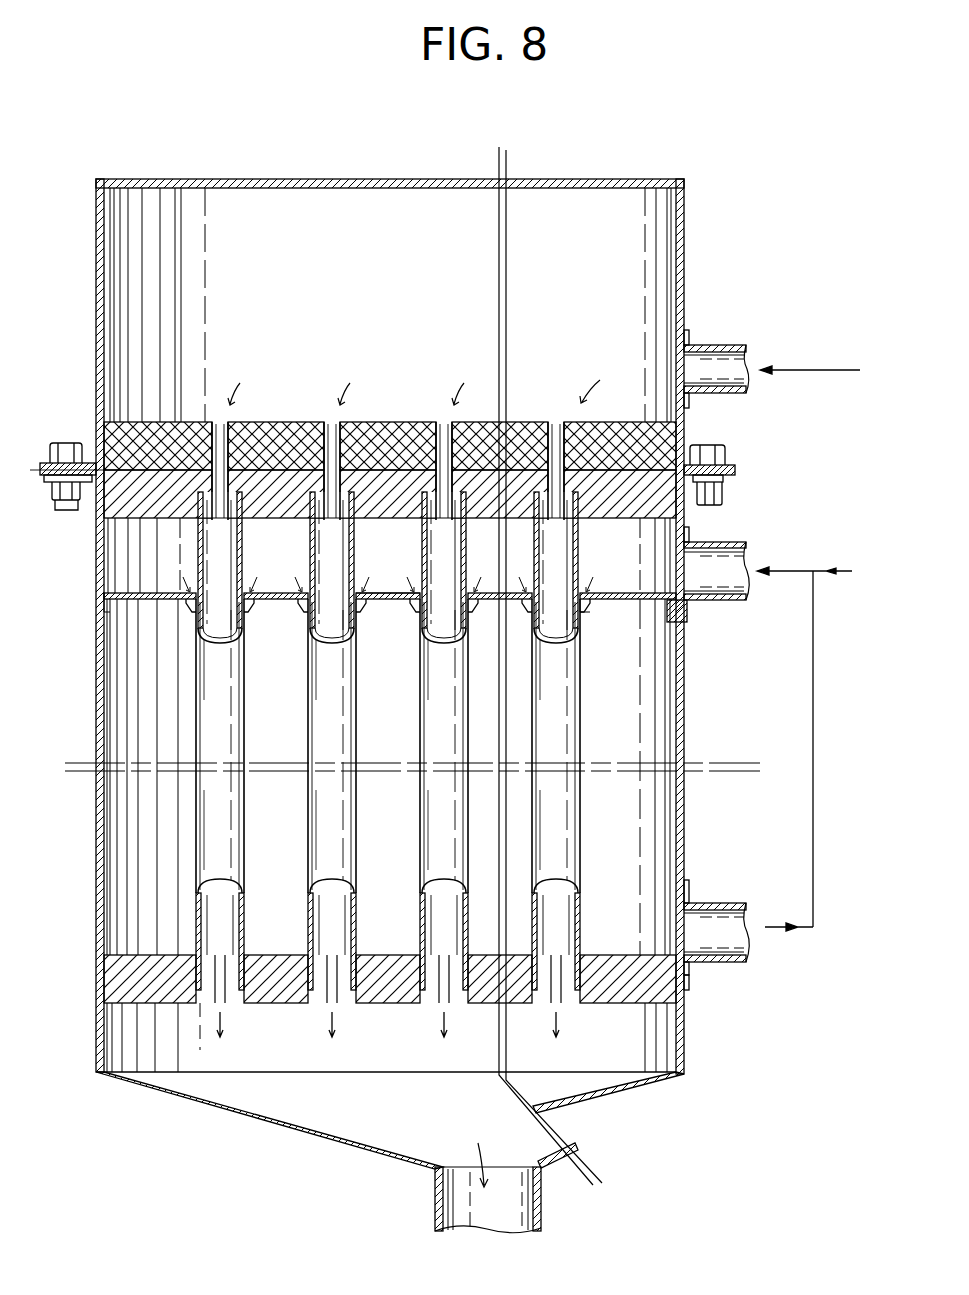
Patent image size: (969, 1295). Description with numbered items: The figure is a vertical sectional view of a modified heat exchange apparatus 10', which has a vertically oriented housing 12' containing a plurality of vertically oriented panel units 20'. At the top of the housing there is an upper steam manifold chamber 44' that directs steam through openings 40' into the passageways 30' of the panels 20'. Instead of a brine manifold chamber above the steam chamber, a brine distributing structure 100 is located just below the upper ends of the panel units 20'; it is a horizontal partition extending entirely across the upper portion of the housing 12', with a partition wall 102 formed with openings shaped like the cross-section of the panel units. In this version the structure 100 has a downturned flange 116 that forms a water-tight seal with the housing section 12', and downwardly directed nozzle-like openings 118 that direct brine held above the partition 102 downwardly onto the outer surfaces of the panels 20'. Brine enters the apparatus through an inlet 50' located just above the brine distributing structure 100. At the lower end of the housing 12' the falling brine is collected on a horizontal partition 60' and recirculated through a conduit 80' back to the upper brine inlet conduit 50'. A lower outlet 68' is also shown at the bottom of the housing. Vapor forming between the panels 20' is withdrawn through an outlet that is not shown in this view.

The heat exchange apparatus 10' is at (445, 690).
The housing 12' is at (426, 674).
The panel units 20' is at (403, 807).
The passageways 30' is at (415, 567).
The through openings 40' is at (388, 431).
The upper steam manifold chamber 44' is at (744, 341).
The brine inlet 50' is at (768, 714).
The horizontal partition 60' is at (423, 979).
The outlet 68' is at (521, 1188).
The conduit 80' is at (748, 912).
The brine distributing structure 100 is at (275, 600).
The partition wall 102 is at (388, 592).
The downturned flange 116 is at (688, 612).
The nozzle-like openings 118 is at (586, 612).